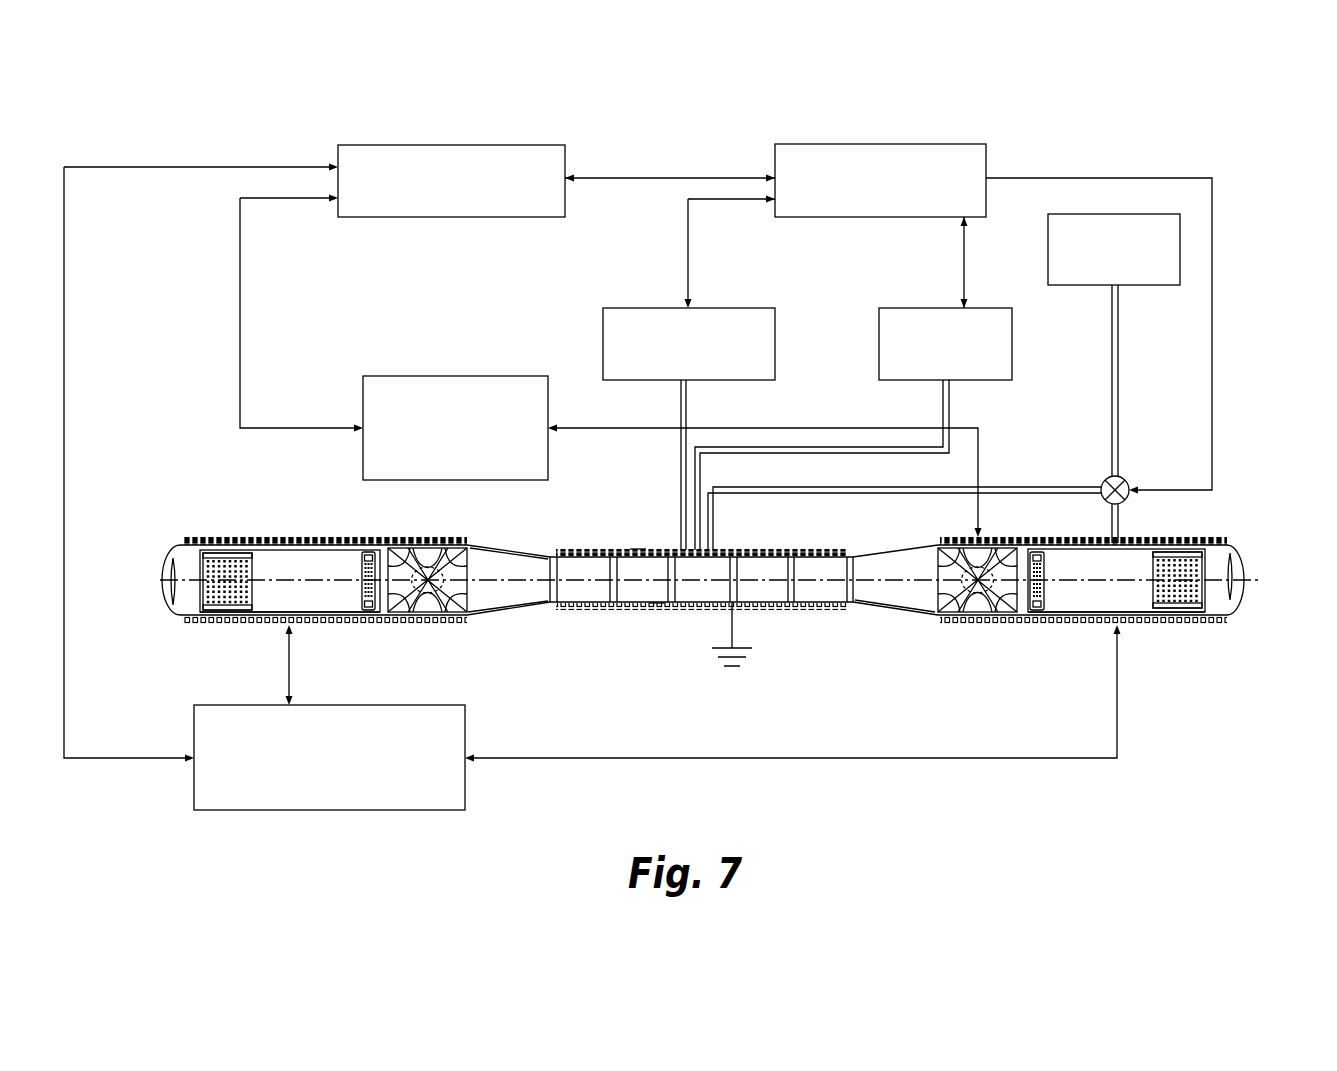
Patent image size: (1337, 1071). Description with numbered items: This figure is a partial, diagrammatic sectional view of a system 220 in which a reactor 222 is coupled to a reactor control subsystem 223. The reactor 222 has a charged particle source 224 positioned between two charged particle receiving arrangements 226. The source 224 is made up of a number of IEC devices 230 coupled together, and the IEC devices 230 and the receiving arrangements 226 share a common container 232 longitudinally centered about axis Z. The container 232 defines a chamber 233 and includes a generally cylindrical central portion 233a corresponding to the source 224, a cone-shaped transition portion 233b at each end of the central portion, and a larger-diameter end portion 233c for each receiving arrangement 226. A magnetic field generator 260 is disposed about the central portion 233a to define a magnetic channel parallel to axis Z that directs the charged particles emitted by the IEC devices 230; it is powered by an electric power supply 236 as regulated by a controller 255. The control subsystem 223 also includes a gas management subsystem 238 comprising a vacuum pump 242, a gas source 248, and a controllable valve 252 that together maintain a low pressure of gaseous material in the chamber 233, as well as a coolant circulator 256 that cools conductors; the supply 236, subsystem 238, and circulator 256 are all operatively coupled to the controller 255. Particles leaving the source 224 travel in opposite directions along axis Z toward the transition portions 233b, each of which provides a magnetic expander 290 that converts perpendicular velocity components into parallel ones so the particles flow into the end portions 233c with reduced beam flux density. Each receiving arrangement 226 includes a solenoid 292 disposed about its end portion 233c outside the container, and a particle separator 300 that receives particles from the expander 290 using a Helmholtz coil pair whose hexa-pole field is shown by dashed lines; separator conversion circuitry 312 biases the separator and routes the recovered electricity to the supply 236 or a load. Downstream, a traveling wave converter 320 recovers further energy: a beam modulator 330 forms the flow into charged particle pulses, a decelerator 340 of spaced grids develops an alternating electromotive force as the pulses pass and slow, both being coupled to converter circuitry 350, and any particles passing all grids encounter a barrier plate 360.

The system 220 is at (1218, 111).
The reactor 222 is at (1244, 622).
The reactor control subsystem 223 is at (1008, 153).
The charged particle source 224 is at (638, 543).
The charged particle receiving arrangement 226 is at (166, 537).
The IEC device 230 is at (701, 579).
The container 232 is at (496, 541).
The chamber 233 is at (882, 604).
The central portion 233a is at (757, 606).
The transition portion 233b is at (508, 615).
The end portion 233c is at (245, 538).
The electric power supply 236 is at (495, 217).
The gas management subsystem 238 is at (893, 290).
The vacuum pump 242 is at (879, 325).
The gas source 248 is at (1145, 285).
The controllable valve 252 is at (1126, 481).
The controller 255 is at (805, 144).
The coolant circulator 256 is at (603, 320).
The magnetic field generator 260 is at (656, 614).
The magnetic expander 290 is at (546, 546).
The solenoid 292 is at (340, 626).
The particle separator 300 is at (463, 546).
The separator conversion circuitry 312 is at (387, 376).
The traveling wave converter 320 is at (200, 598).
The beam modulator 330 is at (362, 588).
The decelerator 340 is at (253, 573).
The converter circuitry 350 is at (465, 725).
The barrier plate 360 is at (168, 598).